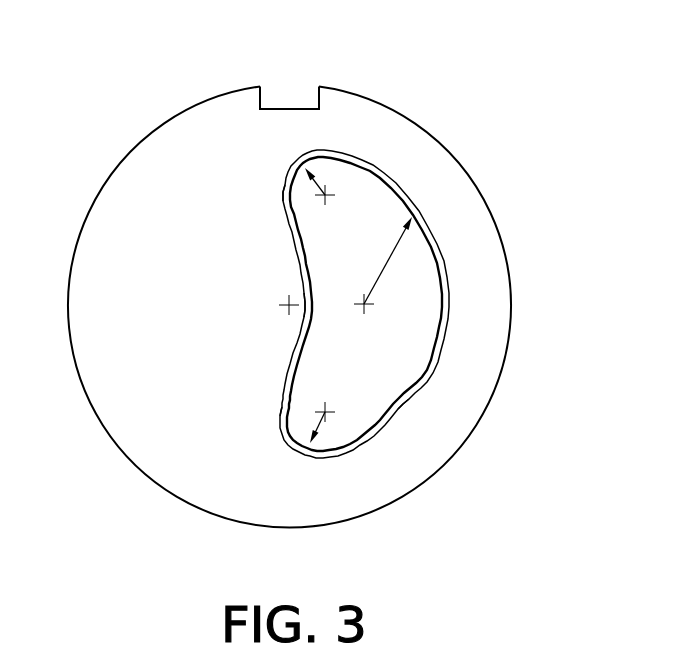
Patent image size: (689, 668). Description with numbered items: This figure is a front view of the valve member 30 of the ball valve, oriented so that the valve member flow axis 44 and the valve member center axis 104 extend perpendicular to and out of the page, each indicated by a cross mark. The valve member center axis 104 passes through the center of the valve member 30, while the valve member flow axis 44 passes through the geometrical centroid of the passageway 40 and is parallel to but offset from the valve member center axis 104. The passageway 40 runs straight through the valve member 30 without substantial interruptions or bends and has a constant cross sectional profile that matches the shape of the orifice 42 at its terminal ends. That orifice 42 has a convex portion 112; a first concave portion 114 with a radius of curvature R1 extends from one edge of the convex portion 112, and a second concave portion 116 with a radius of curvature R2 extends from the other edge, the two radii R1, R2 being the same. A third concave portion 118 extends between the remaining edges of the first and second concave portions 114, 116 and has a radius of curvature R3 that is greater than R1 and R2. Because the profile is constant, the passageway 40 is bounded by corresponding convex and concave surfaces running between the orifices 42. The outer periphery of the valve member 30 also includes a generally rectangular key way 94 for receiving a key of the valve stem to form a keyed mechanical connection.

The valve member 30 is at (509, 258).
The key way 94 is at (291, 75).
The passageway 40 is at (400, 345).
The orifice 42 is at (432, 223).
The valve member flow axis 44 is at (366, 306).
The valve member center axis 104 is at (289, 306).
The first radius of curvature R1 is at (326, 188).
The second radius of curvature R2 is at (327, 420).
The third radius of curvature R3 is at (388, 245).
The convex portion 112 is at (297, 228).
The first concave portion 114 is at (297, 176).
The second concave portion 116 is at (297, 430).
The third concave portion 118 is at (406, 403).